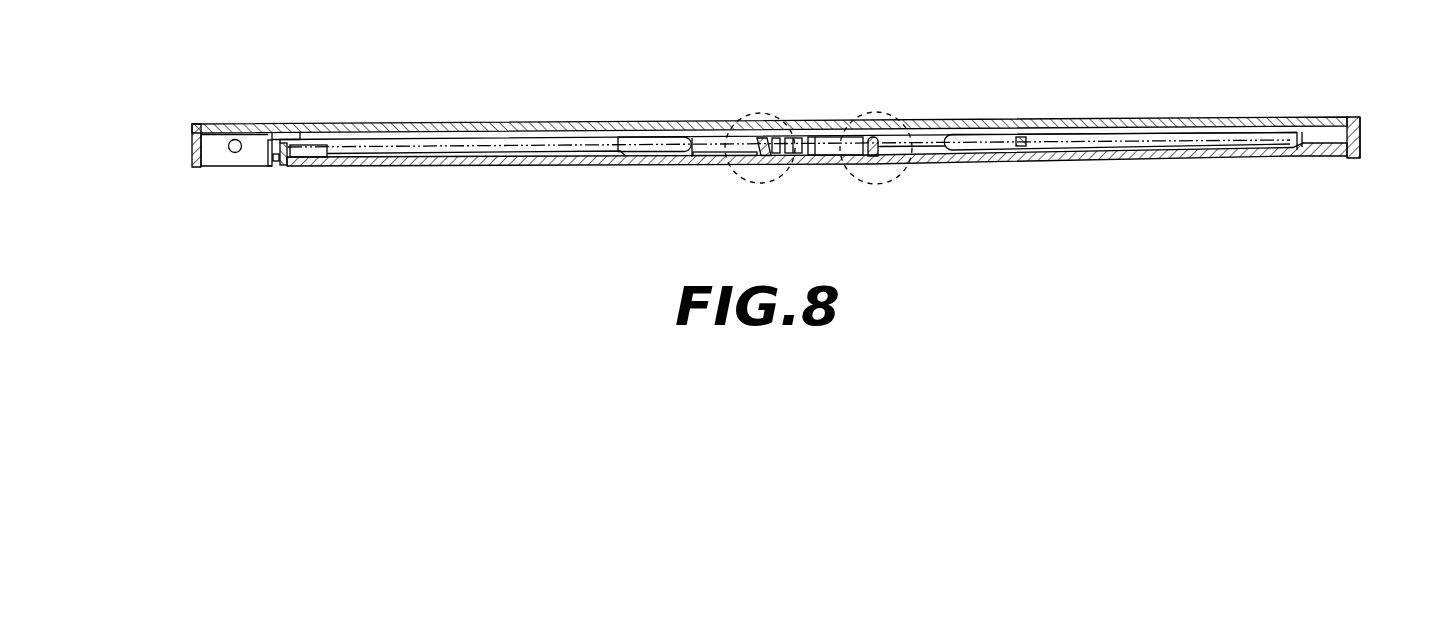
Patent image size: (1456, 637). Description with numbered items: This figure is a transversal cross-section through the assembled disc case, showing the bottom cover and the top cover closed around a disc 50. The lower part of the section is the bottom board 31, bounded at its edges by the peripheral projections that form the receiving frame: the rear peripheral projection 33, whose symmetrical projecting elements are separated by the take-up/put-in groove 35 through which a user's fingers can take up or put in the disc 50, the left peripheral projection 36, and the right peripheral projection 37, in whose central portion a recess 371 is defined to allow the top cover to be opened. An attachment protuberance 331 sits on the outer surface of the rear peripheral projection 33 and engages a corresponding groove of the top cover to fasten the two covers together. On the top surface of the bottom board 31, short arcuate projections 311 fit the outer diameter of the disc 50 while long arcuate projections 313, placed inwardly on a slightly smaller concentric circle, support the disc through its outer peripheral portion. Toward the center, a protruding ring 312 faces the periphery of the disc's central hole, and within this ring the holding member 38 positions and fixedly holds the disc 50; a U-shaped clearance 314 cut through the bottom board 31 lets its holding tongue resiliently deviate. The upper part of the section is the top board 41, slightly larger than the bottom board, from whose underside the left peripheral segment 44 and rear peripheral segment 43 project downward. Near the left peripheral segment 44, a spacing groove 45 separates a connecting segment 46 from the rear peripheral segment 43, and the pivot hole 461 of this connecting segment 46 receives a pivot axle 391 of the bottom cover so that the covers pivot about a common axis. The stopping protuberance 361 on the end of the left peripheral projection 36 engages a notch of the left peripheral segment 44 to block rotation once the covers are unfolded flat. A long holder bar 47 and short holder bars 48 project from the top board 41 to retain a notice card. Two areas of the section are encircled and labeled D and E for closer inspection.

The bottom board 31 is at (573, 161).
The rear peripheral projection 33 is at (527, 138).
The short arcuate projections 311 is at (340, 146).
The protruding ring 312 is at (692, 158).
The long arcuate projections 313 is at (347, 170).
The U-shaped clearance 314 is at (866, 160).
The attachment protuberance 331 is at (1026, 138).
The take-up/put-in groove 35 is at (698, 136).
The left peripheral projection 36 is at (288, 166).
The stopping protuberances 361 is at (279, 168).
The right peripheral projection 37 is at (1349, 120).
The recess 371 is at (1362, 130).
The holding member 38 is at (829, 128).
The pivot axles 391 is at (236, 139).
The top board 41 is at (765, 131).
The rear peripheral segment 43 is at (571, 139).
The left peripheral segment 44 is at (193, 137).
The spacing grooves 45 is at (273, 166).
The connecting segments 46 is at (215, 160).
The pivot hole 461 is at (243, 147).
The long holder bar 47 is at (310, 139).
The short holder bars 48 is at (1336, 128).
The disc 50 is at (487, 150).
The detail region D is at (760, 185).
The detail region E is at (887, 118).